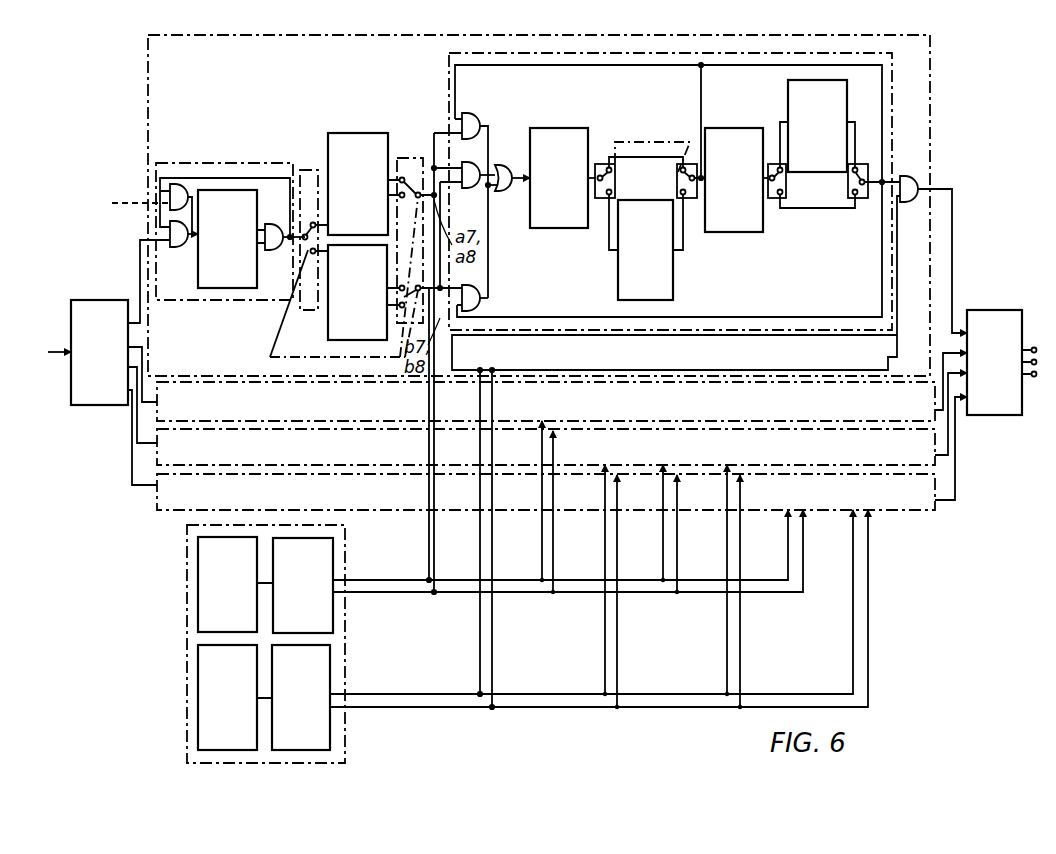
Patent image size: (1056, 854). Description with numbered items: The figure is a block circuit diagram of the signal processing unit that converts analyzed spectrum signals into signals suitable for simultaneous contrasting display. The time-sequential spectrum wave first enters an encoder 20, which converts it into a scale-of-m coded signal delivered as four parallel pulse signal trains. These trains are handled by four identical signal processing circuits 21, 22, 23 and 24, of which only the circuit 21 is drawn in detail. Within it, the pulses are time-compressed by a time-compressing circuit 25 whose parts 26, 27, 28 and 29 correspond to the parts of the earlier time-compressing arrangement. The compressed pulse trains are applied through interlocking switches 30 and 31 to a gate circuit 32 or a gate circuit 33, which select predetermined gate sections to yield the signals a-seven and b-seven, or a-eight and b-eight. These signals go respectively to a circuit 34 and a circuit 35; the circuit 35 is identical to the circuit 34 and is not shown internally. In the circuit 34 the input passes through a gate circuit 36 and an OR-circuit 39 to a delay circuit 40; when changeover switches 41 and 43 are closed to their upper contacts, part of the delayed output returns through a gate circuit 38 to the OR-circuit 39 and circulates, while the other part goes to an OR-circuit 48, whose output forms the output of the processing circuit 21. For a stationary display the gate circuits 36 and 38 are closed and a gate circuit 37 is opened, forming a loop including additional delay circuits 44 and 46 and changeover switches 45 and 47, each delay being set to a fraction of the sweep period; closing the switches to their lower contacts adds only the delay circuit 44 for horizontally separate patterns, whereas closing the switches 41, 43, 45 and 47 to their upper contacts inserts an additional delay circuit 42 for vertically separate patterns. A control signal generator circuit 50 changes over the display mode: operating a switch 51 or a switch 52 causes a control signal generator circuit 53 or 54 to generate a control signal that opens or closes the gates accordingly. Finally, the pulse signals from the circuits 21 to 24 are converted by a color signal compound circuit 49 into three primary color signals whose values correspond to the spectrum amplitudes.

The encoder 20 is at (100, 300).
The signal processing circuit 21 is at (148, 100).
The signal processing circuit 22 is at (196, 382).
The signal processing circuit 23 is at (157, 455).
The signal processing circuit 24 is at (157, 508).
The time-compressing circuit 25 is at (215, 163).
The part of time-compressing circuit 26 is at (178, 247).
The part of time-compressing circuit 27 is at (225, 288).
The part of time-compressing circuit 28 is at (272, 224).
The part of time-compressing circuit 29 is at (178, 184).
The interlocking switch 30 is at (308, 162).
The interlocking switch 31 is at (410, 158).
The gate circuit 32 is at (350, 133).
The gate circuit 33 is at (328, 333).
The circuit 34 is at (449, 96).
The circuit 35 is at (540, 317).
The gate circuit 36 is at (472, 188).
The gate circuit 37 is at (482, 292).
The gate circuit 38 is at (486, 110).
The OR-circuit 39 is at (505, 165).
The delay circuit 40 is at (560, 128).
The changeover switch 41 is at (600, 164).
The delay circuit 42 is at (673, 282).
The changeover switch 43 is at (677, 182).
The delay circuit 44 is at (730, 128).
The changeover switch 45 is at (786, 186).
The delay circuit 46 is at (788, 100).
The changeover switch 47 is at (858, 198).
The OR-circuit 48 is at (910, 176).
The color signal compound circuit 49 is at (990, 310).
The control signal generator circuit 50 is at (187, 612).
The switch 51 is at (198, 570).
The switch 52 is at (198, 700).
The control signal generator circuit 53 is at (333, 552).
The control signal generator circuit 54 is at (330, 672).